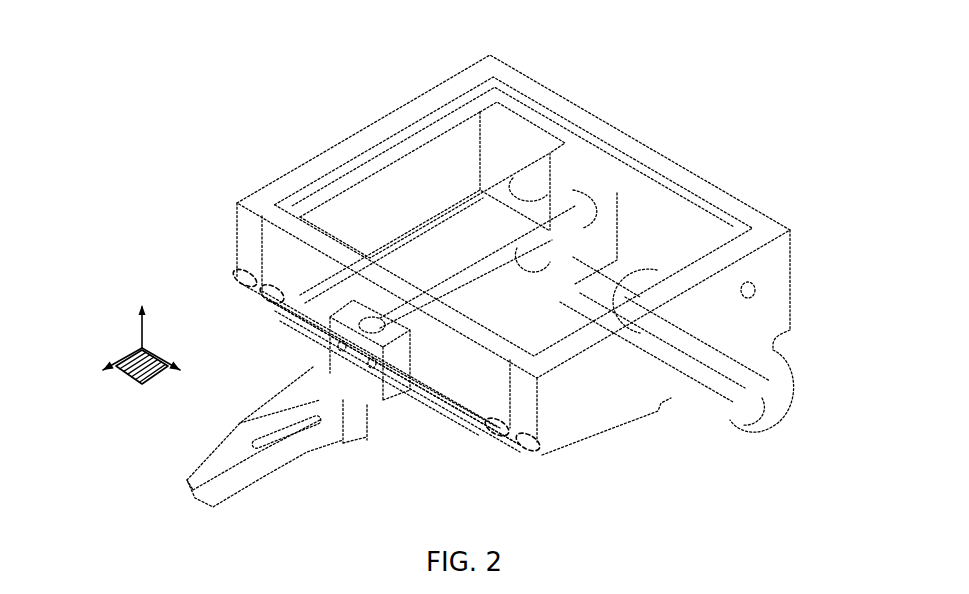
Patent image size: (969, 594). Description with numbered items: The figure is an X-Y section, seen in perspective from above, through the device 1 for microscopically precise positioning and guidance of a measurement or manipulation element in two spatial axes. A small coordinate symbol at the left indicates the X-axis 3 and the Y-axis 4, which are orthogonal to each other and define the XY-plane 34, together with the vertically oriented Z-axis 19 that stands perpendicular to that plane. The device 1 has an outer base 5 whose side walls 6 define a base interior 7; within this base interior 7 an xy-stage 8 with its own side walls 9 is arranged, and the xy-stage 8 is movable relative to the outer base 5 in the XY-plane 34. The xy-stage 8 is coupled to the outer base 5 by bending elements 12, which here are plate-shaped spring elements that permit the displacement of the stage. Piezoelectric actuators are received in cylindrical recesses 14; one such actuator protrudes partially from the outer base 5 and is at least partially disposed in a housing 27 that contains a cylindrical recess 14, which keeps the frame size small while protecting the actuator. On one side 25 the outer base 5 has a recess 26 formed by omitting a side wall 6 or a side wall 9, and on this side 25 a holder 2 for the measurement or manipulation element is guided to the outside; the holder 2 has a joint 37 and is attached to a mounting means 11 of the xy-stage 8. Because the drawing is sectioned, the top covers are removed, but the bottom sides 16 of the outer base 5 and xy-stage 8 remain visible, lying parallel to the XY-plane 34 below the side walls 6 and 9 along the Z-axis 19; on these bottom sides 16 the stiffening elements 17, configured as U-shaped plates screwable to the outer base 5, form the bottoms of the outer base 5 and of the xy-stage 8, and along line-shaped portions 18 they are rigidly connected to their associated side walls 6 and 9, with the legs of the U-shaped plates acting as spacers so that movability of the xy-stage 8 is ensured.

The device 1 is at (802, 36).
The holder 2 is at (282, 482).
The X-axis 3 is at (118, 360).
The Y-axis 4 is at (148, 360).
The outer base 5 is at (772, 263).
The side walls 6 is at (722, 202).
The base interior 7 is at (521, 101).
The xy-stage 8 is at (413, 147).
The side walls 9 is at (645, 190).
The mounting means 11 is at (397, 377).
The bending elements 12 is at (432, 117).
The cylindrical recesses 14 is at (568, 205).
The bottom sides 16 is at (670, 412).
The stiffening elements 17 is at (318, 332).
The line-shaped portions 18 is at (283, 303).
The Z-axis 19 is at (137, 322).
The side 25 is at (452, 450).
The recess 26 is at (433, 377).
The housing 27 is at (767, 407).
The XY-plane 34 is at (132, 385).
The joint 37 is at (360, 437).